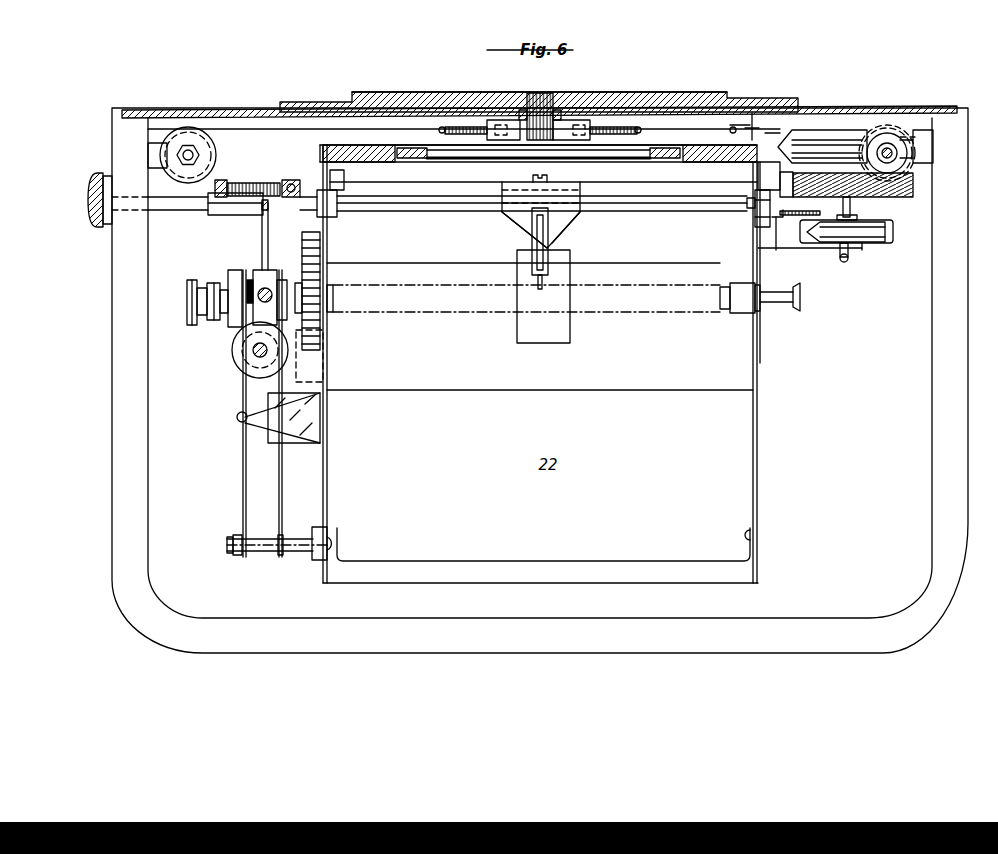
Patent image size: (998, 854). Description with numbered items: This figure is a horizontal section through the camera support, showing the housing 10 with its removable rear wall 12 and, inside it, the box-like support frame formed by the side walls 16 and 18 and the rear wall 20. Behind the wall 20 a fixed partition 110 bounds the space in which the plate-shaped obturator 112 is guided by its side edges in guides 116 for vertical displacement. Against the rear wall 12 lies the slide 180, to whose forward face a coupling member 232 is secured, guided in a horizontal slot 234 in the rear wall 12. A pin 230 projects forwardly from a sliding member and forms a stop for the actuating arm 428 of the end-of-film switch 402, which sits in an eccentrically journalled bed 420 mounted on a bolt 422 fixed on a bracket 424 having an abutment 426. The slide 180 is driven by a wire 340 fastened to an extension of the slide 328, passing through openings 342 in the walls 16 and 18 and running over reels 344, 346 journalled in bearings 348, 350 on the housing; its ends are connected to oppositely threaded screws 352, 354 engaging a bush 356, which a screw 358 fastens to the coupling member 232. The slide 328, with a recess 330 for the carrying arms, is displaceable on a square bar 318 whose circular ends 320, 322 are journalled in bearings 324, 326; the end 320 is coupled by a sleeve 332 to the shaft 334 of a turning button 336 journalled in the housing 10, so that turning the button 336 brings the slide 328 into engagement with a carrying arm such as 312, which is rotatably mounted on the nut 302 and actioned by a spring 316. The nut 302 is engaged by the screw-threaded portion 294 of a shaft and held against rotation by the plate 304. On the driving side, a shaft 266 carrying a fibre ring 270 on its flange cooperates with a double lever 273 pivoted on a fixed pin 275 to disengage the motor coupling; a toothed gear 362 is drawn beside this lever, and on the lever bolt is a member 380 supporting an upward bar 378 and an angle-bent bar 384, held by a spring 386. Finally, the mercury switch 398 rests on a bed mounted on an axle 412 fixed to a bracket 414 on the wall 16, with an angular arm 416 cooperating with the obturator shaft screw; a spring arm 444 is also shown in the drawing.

The housing 10 is at (112, 318).
The rear wall 12 is at (198, 109).
The side wall 16 is at (758, 443).
The side wall 18 is at (323, 470).
The rear wall 20 is at (322, 156).
The partition 110 is at (363, 143).
The obturator 112 is at (620, 160).
The guides 116 is at (407, 148).
The slide 180 is at (705, 97).
The pin 230 is at (756, 117).
The coupling member 232 is at (560, 114).
The horizontal slot 234 is at (668, 98).
The shaft 266 is at (251, 351).
The fibre ring 270 is at (250, 372).
The double lever 273 is at (250, 474).
The fixed pin 275 is at (258, 553).
The screw-threaded portion 294 is at (681, 314).
The nut 302 is at (570, 330).
The plate 304 is at (674, 391).
The carrying arm 312 is at (562, 236).
The spring 316 is at (532, 250).
The bar 318 is at (656, 213).
The circular end 320 is at (334, 217).
The circular end 322 is at (750, 208).
The bearing 324 is at (337, 197).
The bearing 326 is at (765, 190).
The slide 328 is at (508, 188).
The recess 330 is at (541, 204).
The sleeve 332 is at (222, 216).
The shaft 334 is at (163, 212).
The turning button 336 is at (96, 172).
The wire 340 is at (242, 127).
The openings 342 is at (336, 178).
The reel 344 is at (218, 155).
The reel 346 is at (905, 135).
The bearing 348 is at (158, 170).
The bearing 350 is at (913, 152).
The screw 352 is at (455, 127).
The screw 354 is at (610, 127).
The bush 356 is at (507, 122).
The screw 358 is at (546, 112).
The rack gear 362 is at (322, 338).
The bar 378 is at (238, 305).
The member 380 is at (268, 271).
The bar 384 is at (270, 224).
The spring 386 is at (247, 266).
The mercury switch 398 is at (880, 243).
The switch 402 is at (833, 137).
The axle 412 is at (845, 260).
The bracket 414 is at (781, 251).
The angular arm 416 is at (851, 210).
The bed 420 is at (893, 130).
The bolt 422 is at (872, 130).
The bracket 424 is at (775, 133).
The abutment 426 is at (915, 137).
The actuating arm 428 is at (735, 127).
The spring arm 444 is at (796, 230).